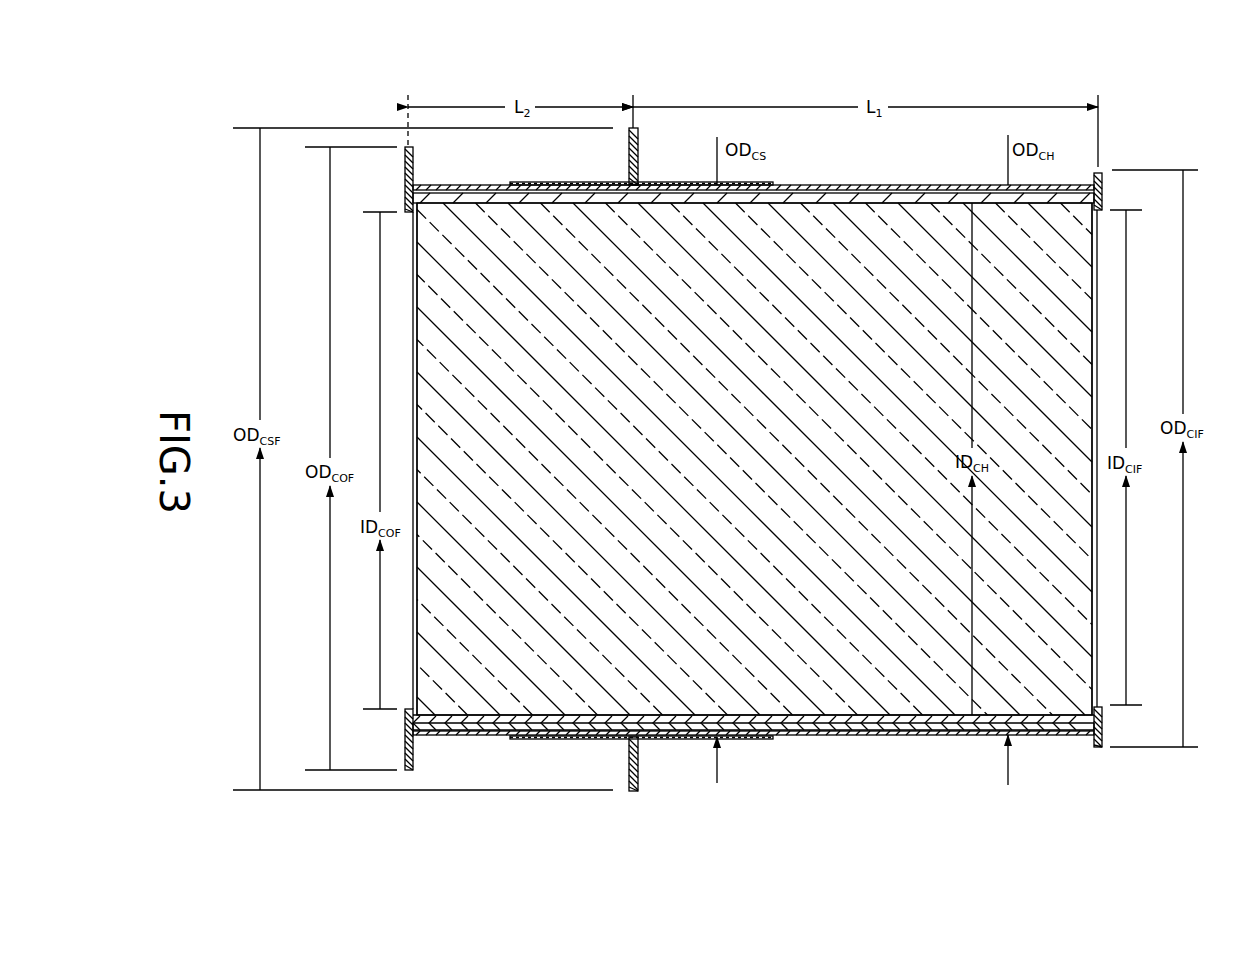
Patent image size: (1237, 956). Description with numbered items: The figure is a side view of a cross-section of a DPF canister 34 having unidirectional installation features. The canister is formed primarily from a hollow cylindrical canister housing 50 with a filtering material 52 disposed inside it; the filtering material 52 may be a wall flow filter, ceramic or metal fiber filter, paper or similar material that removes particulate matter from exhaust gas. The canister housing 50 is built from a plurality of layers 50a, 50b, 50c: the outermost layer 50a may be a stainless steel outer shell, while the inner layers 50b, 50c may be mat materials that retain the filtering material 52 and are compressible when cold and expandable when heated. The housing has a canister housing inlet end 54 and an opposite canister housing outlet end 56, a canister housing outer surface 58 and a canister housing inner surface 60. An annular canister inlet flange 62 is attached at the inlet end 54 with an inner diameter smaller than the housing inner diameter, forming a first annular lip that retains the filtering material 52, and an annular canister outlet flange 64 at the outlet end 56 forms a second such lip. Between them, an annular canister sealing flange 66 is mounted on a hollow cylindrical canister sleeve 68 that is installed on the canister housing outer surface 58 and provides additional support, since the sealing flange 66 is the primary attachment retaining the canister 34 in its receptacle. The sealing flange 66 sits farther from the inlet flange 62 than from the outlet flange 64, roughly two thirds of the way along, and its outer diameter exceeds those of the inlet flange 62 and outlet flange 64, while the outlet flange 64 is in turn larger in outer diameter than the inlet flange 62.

The DPF canister 34 is at (1158, 124).
The canister housing 50 is at (753, 176).
The outermost layer 50a is at (838, 732).
The inner layer 50b is at (882, 728).
The inner layer 50c is at (930, 720).
The filtering material 52 is at (740, 692).
The canister housing inlet end 54 is at (1090, 735).
The canister housing outlet end 56 is at (413, 740).
The canister housing outer surface 58 is at (905, 185).
The canister housing inner surface 60 is at (524, 715).
The canister inlet flange 62 is at (1102, 173).
The canister outlet flange 64 is at (413, 178).
The canister sealing flange 66 is at (640, 158).
The canister sleeve 68 is at (540, 182).